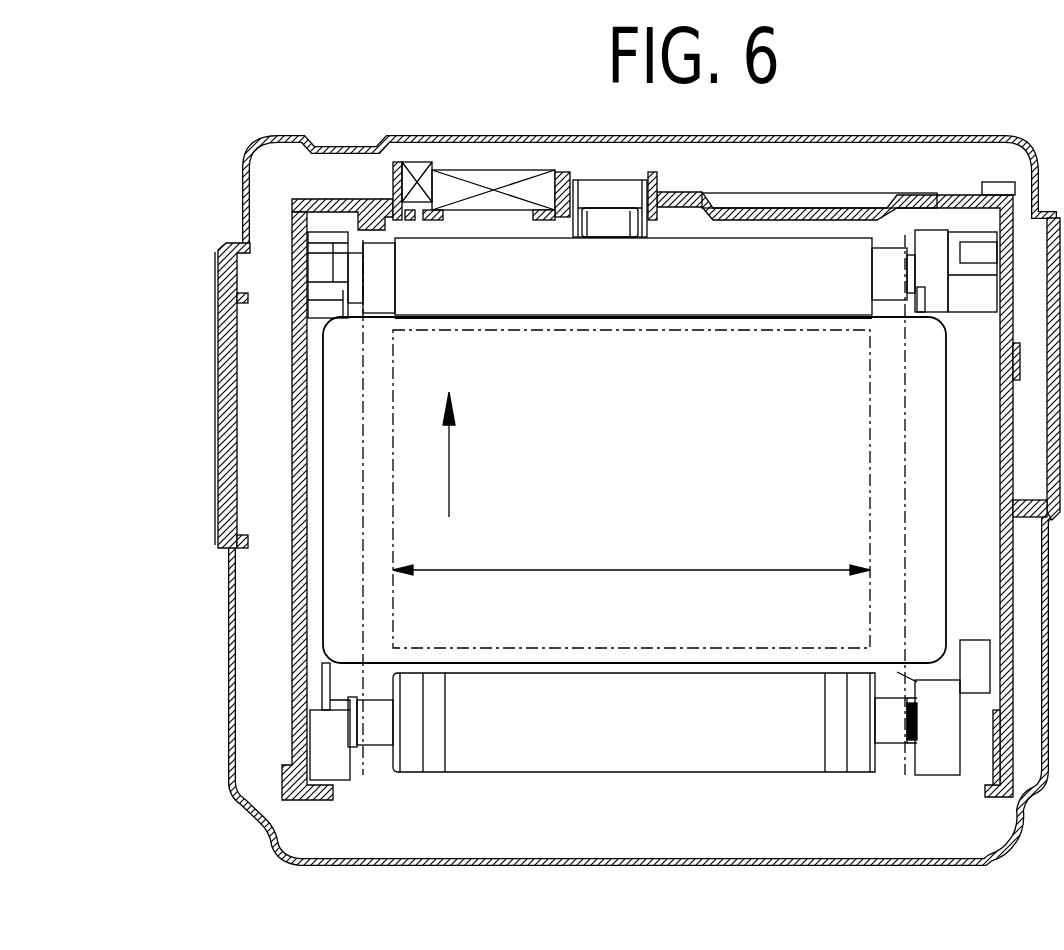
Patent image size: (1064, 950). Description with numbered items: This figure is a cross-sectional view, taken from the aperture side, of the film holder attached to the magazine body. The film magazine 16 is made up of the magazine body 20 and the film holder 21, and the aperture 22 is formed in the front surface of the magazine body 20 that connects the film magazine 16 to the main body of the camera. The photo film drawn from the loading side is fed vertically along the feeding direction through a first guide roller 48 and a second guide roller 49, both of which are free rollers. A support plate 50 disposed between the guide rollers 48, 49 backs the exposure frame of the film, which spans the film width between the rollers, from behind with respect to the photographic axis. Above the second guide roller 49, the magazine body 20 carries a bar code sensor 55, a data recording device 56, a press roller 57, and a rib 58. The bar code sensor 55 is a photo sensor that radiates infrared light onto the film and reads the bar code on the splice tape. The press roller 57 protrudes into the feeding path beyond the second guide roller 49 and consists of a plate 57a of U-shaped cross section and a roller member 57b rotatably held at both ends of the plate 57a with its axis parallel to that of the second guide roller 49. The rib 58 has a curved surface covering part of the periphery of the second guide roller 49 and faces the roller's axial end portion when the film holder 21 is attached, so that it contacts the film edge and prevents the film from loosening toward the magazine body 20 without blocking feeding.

The film magazine 16 is at (585, 500).
The magazine body 20 is at (215, 645).
The film holder 21 is at (315, 724).
The aperture 22 is at (678, 335).
The first guide roller 48 is at (643, 738).
The second guide roller 49 is at (805, 293).
The support plate 50 is at (930, 455).
The bar code sensor 55 is at (497, 205).
The data recording device 56 is at (407, 182).
The press roller 57 is at (655, 223).
The plate 57a is at (615, 182).
The roller member 57b is at (607, 227).
The rib 58 is at (367, 230).